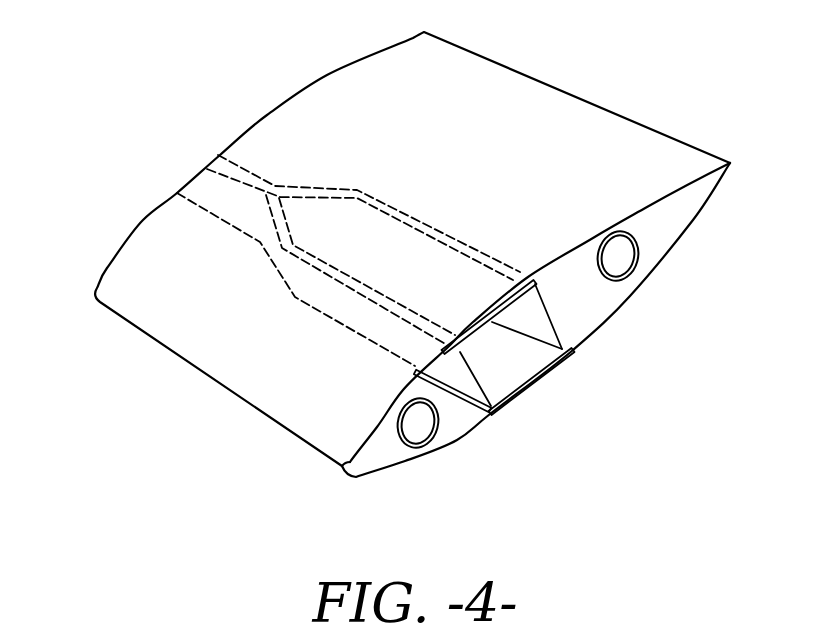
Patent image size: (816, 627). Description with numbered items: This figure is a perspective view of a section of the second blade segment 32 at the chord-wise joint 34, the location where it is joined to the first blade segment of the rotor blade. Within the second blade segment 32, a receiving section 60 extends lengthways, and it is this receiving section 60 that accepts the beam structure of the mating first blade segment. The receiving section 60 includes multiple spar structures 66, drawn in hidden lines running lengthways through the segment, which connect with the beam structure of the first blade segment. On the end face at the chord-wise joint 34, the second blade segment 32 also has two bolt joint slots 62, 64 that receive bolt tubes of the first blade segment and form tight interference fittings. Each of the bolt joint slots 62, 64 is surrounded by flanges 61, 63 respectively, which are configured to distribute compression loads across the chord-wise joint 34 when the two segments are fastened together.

The second blade segment 32 is at (560, 90).
The chord-wise joint 34 is at (378, 452).
The receiving section 60 is at (510, 372).
The flanges 61 is at (407, 403).
The bolt joint slot 62 is at (423, 425).
The flanges 63 is at (612, 235).
The bolt joint slot 64 is at (620, 258).
The spar structures 66 is at (410, 218).